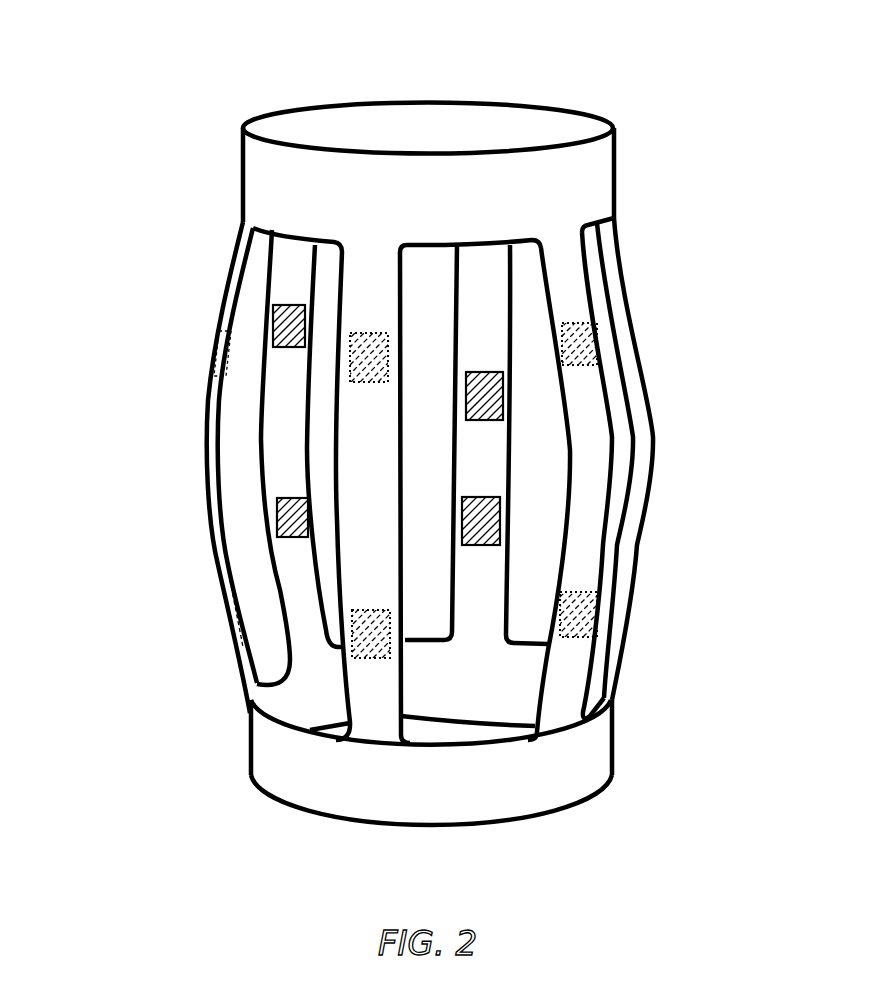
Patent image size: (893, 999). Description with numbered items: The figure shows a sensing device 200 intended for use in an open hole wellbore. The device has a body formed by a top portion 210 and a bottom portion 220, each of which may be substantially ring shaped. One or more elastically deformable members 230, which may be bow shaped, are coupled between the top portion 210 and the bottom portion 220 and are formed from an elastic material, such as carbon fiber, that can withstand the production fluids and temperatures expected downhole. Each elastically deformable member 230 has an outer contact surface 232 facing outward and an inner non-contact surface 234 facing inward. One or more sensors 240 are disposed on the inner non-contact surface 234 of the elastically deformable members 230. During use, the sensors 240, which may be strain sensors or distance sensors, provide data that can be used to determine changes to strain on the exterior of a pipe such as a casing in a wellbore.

The sensing device 200 is at (658, 81).
The top portion 210 is at (275, 185).
The bottom portion 220 is at (298, 771).
The elastically deformable member 230 is at (215, 410).
The outer contact surface 232 is at (587, 392).
The inner non-contact surface 234 is at (293, 603).
The sensor 240 is at (270, 316).